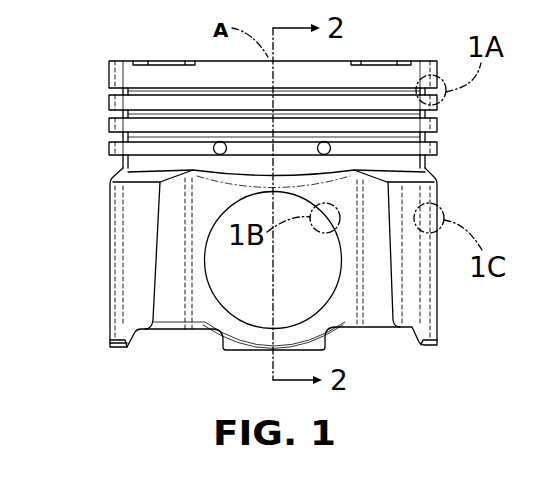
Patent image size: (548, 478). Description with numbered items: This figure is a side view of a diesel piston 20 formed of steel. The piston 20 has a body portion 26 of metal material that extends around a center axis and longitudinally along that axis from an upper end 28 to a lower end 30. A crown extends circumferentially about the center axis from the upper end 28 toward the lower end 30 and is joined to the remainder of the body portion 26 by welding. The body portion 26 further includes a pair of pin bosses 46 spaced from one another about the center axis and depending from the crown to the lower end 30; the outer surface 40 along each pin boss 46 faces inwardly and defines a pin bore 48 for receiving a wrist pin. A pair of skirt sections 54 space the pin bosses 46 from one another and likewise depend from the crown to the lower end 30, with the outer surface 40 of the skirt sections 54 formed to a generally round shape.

The piston 20 is at (85, 54).
The upper end 28 is at (125, 61).
The body portion 26 is at (445, 190).
The skirt sections 54 is at (128, 237).
The lower end 30 is at (118, 348).
The outer surface 40 is at (325, 308).
The pin bosses 46 is at (343, 312).
The pin bore 48 is at (246, 283).